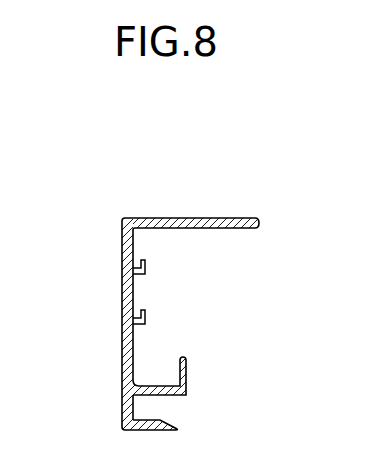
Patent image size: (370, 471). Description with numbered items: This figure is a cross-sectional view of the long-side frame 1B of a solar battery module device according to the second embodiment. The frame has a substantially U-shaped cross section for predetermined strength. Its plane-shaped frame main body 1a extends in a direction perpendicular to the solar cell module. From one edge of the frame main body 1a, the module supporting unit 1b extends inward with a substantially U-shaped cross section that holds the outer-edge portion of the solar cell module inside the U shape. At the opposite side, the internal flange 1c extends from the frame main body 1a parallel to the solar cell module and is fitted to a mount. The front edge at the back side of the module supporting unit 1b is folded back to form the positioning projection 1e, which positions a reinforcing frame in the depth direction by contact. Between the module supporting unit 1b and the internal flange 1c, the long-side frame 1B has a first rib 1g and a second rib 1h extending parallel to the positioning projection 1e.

The long-side frame 1B is at (121, 228).
The frame main body 1a is at (121, 340).
The internal flange 1c is at (185, 218).
The first rib 1g is at (146, 263).
The second rib 1h is at (146, 313).
The positioning projection 1e is at (187, 360).
The module supporting unit 1b is at (136, 404).